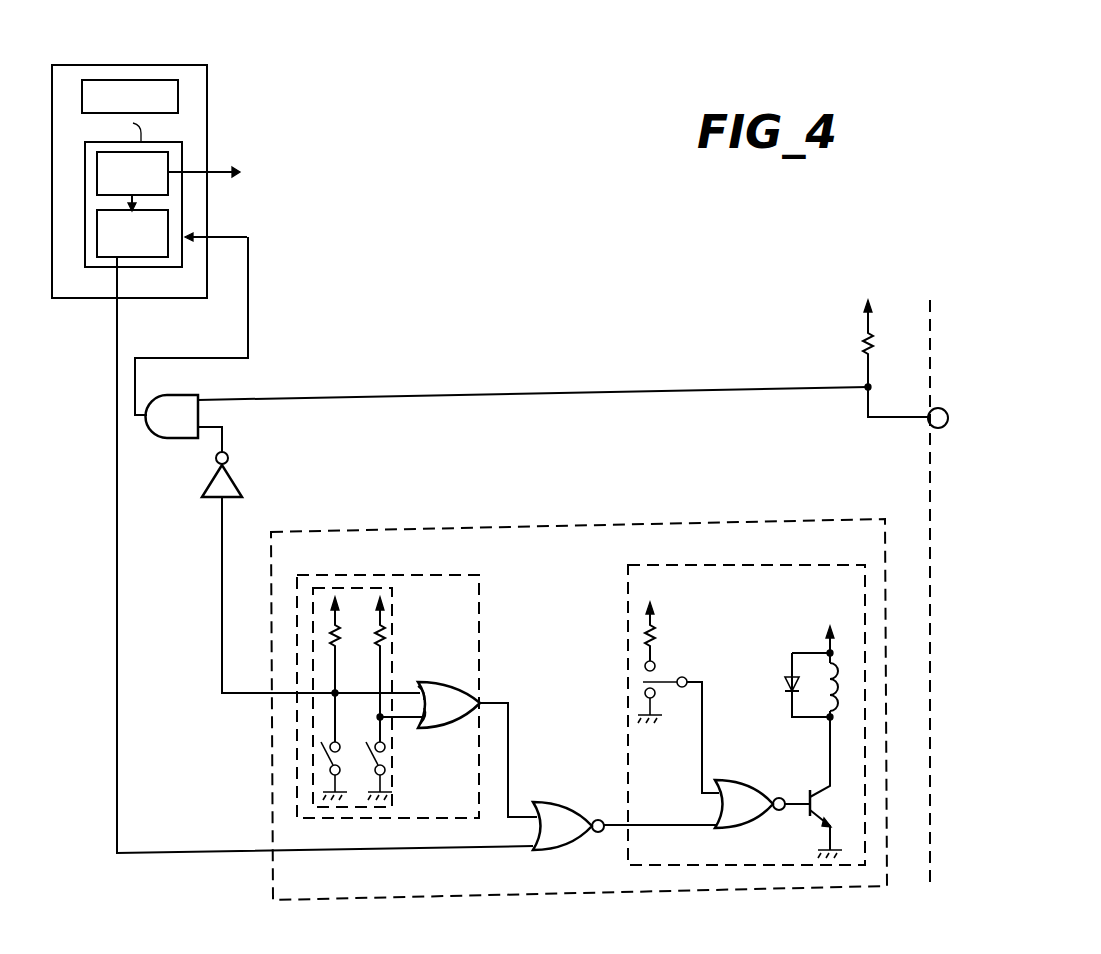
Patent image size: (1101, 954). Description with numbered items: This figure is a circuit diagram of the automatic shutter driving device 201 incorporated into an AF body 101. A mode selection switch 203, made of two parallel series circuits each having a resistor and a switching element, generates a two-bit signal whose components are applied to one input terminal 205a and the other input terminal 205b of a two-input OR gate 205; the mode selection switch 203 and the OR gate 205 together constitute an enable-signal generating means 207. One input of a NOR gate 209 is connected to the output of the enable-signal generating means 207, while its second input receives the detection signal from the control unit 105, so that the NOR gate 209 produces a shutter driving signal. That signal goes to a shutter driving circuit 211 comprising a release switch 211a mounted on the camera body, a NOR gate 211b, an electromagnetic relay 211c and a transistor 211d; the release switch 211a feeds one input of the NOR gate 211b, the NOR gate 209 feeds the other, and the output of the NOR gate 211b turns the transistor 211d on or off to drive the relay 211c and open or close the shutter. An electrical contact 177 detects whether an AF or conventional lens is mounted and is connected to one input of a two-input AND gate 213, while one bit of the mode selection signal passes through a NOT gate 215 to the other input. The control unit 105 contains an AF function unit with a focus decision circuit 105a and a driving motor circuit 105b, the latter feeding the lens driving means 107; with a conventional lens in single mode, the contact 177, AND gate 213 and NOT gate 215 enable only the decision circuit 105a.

The control unit 105 is at (173, 65).
The focus decision circuit 105a is at (168, 220).
The driving motor circuit 105b is at (168, 160).
The lens driving means 107 is at (356, 172).
The AND gate 213 is at (198, 395).
The NOT gate 215 is at (232, 483).
The electrical contact 177 is at (943, 408).
The AF body 101 is at (933, 820).
The automatic shutter driving device 201 is at (355, 525).
The mode selection switch 203 is at (322, 580).
The OR gate 205 is at (440, 683).
The input terminal of the OR gate 205a is at (423, 690).
The input terminal of the OR gate 205b is at (423, 724).
The enable-signal generating means 207 is at (490, 685).
The NOR gate 209 is at (556, 802).
The shutter driving circuit 211 is at (656, 555).
The release switch 211a is at (655, 630).
The NOR gate 211b is at (733, 780).
The electromagnetic relay 211c is at (812, 650).
The transistor 211d is at (806, 800).